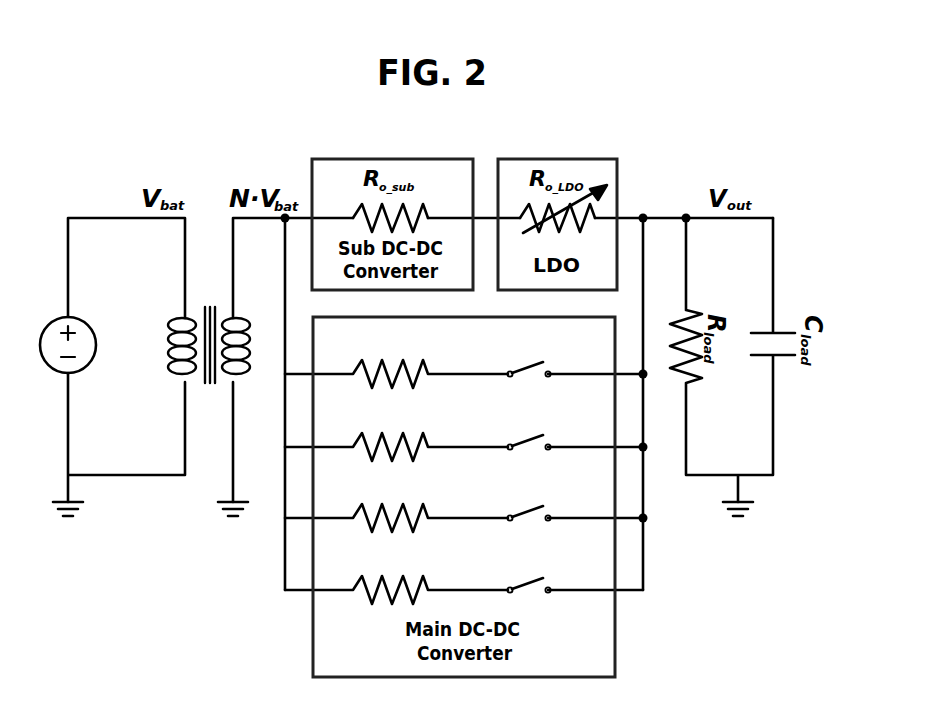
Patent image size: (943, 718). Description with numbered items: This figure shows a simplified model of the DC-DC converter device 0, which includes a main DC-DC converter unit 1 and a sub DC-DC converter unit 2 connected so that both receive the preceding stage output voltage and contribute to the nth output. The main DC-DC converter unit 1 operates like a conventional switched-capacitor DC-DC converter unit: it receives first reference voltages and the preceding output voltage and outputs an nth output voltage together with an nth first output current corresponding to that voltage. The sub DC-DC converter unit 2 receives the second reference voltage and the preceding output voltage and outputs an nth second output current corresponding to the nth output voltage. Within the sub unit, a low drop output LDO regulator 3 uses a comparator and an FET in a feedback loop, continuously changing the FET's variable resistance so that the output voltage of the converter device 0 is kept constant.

The switched resistor branch C 3 of main DC-DC converter 3 is at (464, 360).
The switched resistor branch C 2 of main DC-DC converter 2 is at (464, 432).
The switched resistor branch C 1 of main DC-DC converter 1 is at (464, 503).
The switched resistor branch C 0 of main DC-DC converter 0 is at (464, 575).